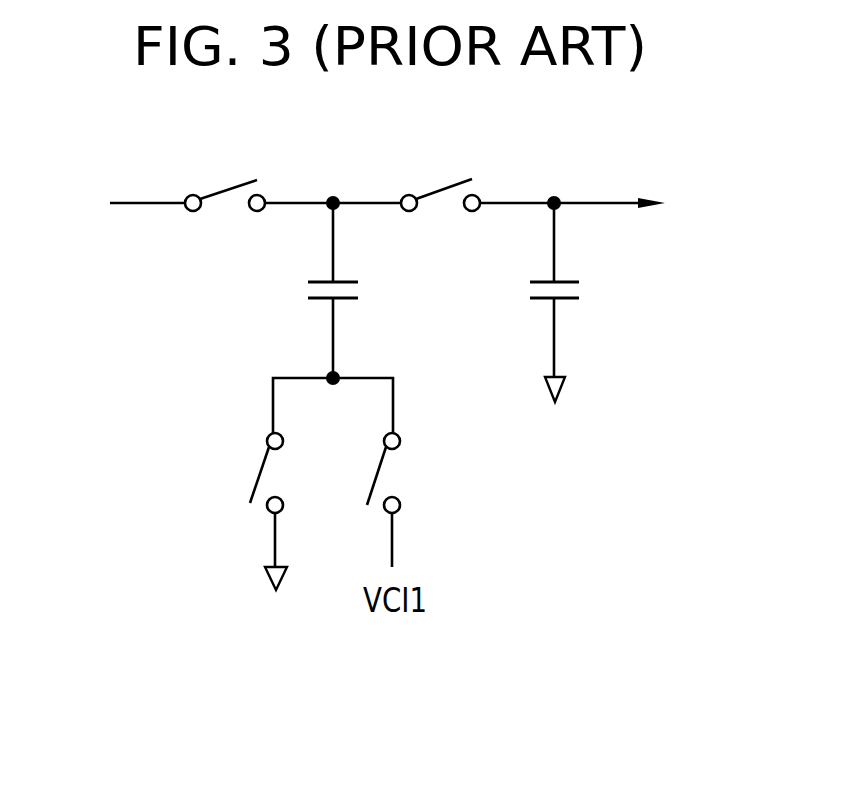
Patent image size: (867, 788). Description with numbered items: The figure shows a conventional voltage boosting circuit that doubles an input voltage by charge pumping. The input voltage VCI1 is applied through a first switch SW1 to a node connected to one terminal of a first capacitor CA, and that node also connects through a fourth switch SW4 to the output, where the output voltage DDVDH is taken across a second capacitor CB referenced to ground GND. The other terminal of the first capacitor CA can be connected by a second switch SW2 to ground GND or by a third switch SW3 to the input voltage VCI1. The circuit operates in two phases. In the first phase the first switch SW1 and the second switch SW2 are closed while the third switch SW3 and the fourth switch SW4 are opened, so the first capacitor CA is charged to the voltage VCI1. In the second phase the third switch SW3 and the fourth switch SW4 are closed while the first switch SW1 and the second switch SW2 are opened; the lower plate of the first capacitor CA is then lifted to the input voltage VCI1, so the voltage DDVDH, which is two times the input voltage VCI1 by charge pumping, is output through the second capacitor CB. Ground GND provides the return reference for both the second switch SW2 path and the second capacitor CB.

The first switch SW1 is at (225, 218).
The second switch SW2 is at (221, 500).
The third switch SW3 is at (417, 500).
The fourth switch SW4 is at (440, 217).
The first capacitor CA is at (358, 291).
The second capacitor CB is at (579, 336).
The input voltage VCI1 is at (65, 200).
The output voltage DDVDH is at (713, 204).
The ground terminal GND is at (277, 605).